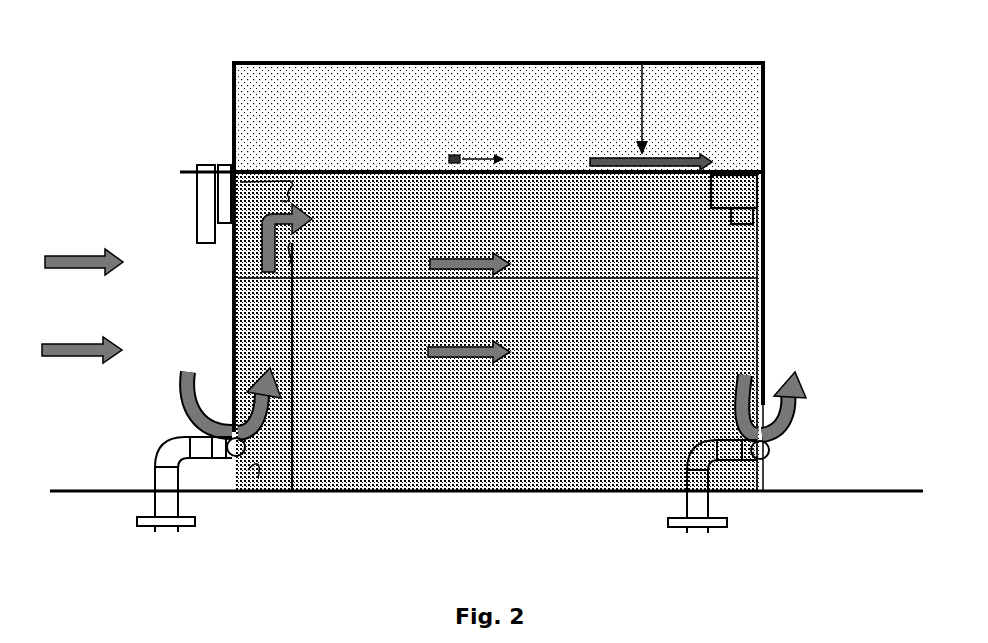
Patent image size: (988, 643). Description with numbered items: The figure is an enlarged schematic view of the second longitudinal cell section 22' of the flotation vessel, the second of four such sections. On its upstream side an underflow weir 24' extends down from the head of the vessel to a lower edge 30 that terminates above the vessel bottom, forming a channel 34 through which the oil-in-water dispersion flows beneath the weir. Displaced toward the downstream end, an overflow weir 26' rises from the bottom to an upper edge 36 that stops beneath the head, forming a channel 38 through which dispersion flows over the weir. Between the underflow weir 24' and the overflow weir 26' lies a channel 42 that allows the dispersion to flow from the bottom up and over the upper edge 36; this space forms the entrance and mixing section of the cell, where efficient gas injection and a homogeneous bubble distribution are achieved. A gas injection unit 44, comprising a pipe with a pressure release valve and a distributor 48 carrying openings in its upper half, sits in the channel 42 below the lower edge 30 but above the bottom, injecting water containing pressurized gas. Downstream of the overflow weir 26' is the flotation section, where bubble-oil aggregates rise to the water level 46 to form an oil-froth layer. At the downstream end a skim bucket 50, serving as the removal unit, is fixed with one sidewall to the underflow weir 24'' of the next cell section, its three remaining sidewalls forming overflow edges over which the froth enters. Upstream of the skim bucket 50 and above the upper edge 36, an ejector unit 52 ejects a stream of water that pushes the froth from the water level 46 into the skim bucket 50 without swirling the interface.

The second longitudinal cell section 22' is at (486, 339).
The underflow weir 24' is at (189, 247).
The underflow weir 24'' is at (812, 276).
The overflow weir 26' is at (359, 397).
The lower edge 30 is at (228, 402).
The channel 34 is at (228, 480).
The upper edge 36 is at (270, 279).
The channel 38 is at (238, 182).
The channel 42 is at (263, 462).
The gas injection unit 44 is at (700, 485).
The water level 46 is at (232, 170).
The distributor 48 is at (225, 438).
The skim bucket 50 is at (748, 190).
The ejector unit 52 is at (450, 146).